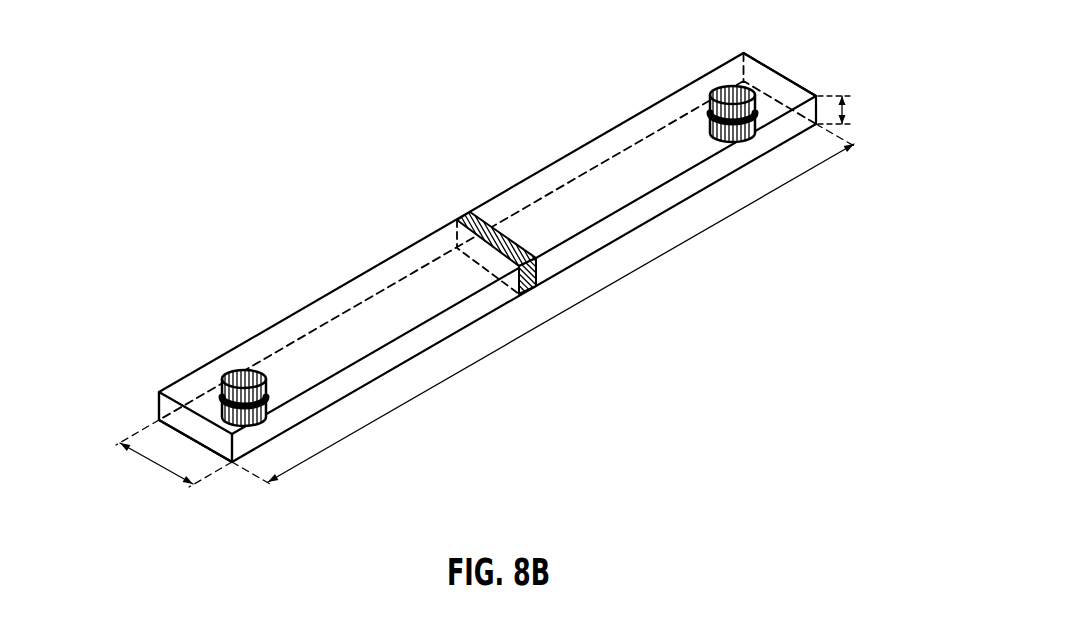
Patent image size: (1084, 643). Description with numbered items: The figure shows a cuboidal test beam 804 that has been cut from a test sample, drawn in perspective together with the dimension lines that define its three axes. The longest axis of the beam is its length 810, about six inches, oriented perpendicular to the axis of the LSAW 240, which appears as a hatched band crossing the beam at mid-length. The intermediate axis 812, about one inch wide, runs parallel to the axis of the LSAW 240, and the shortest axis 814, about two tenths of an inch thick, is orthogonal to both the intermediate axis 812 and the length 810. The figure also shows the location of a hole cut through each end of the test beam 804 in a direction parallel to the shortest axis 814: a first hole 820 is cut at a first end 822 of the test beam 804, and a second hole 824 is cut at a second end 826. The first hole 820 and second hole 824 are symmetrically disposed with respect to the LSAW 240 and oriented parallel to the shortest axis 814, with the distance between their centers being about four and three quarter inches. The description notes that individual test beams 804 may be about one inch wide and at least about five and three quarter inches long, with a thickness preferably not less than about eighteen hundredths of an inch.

The test beam 804 is at (361, 273).
The LSAW 240 is at (466, 212).
The first hole 820 is at (241, 371).
The second hole 824 is at (712, 92).
The second end 826 is at (779, 72).
The first end 822 is at (182, 414).
The length 810 is at (557, 313).
The intermediate axis 812 is at (157, 465).
The shortest axis 814 is at (848, 108).